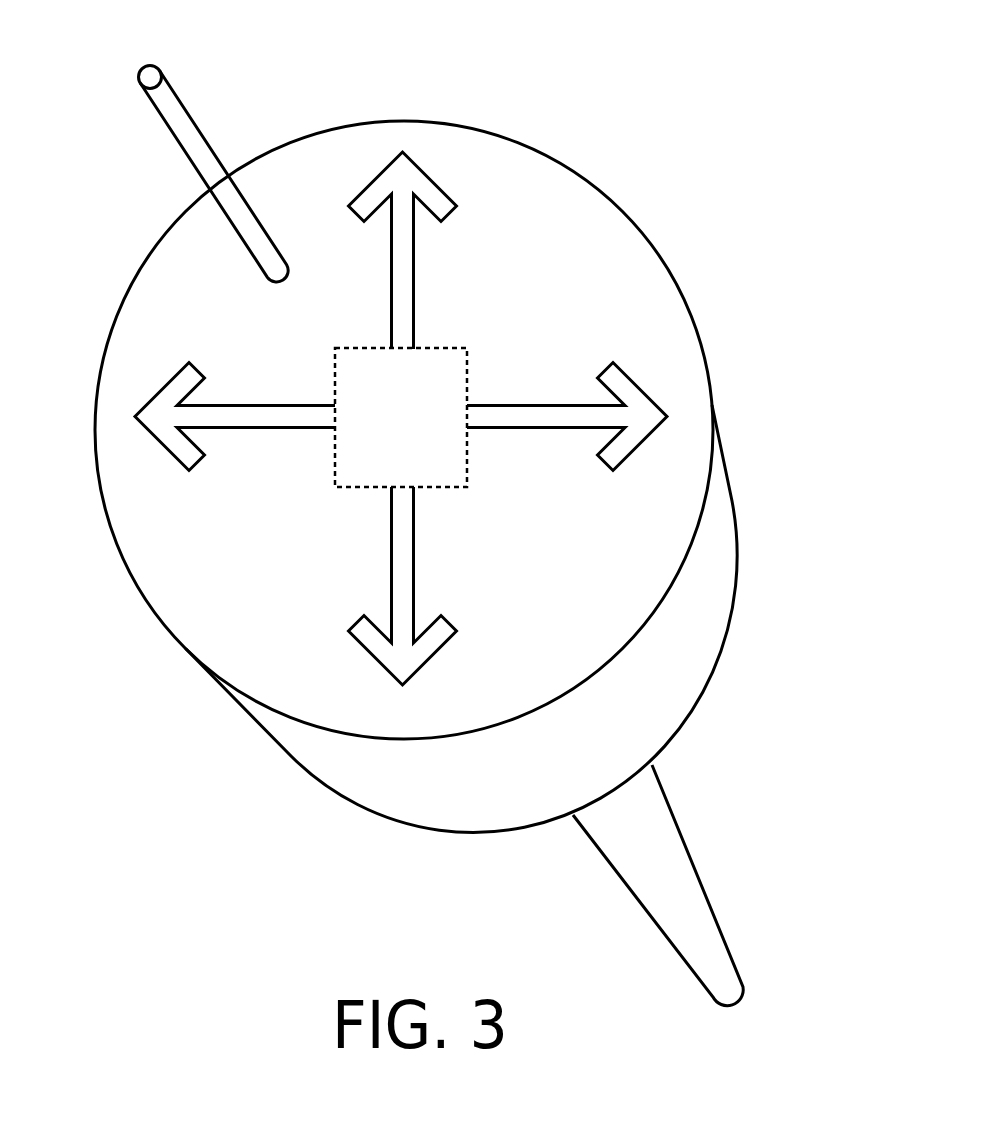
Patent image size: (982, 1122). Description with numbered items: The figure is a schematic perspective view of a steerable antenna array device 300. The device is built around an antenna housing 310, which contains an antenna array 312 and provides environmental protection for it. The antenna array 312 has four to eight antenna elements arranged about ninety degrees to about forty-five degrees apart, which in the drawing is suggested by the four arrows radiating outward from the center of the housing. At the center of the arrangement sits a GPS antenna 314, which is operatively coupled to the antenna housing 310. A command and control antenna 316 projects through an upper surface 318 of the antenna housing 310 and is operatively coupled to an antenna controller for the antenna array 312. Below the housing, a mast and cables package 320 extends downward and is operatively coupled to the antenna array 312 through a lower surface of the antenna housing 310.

The steerable antenna array device 300 is at (730, 130).
The antenna housing 310 is at (733, 517).
The antenna array 312 is at (231, 430).
The GPS antenna 314 is at (465, 455).
The command and control antenna 316 is at (198, 125).
The upper surface 318 is at (142, 368).
The mast and cables package 320 is at (722, 928).